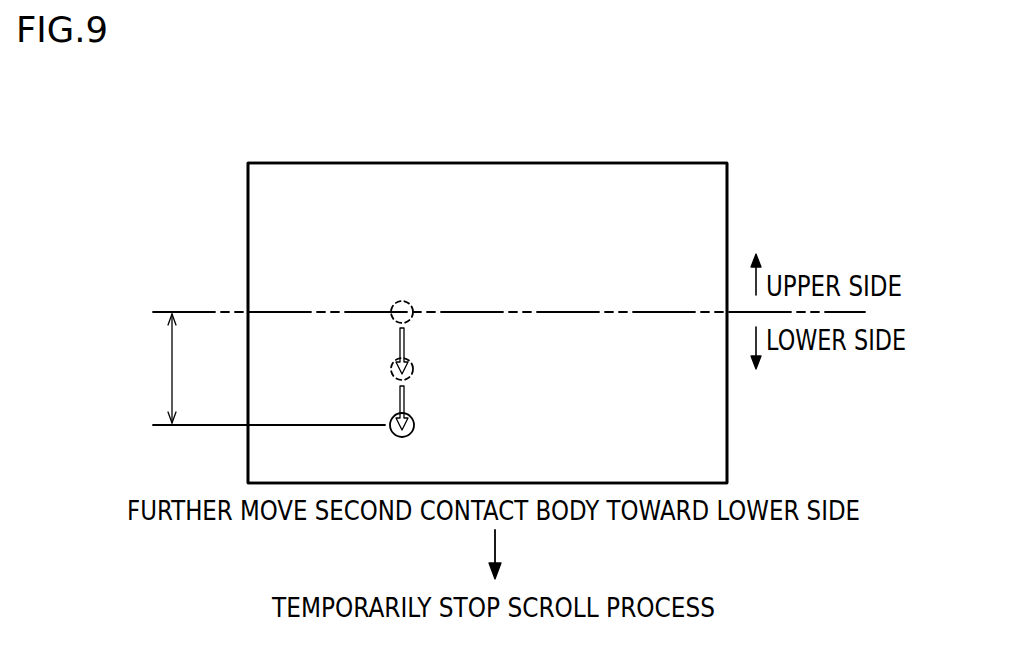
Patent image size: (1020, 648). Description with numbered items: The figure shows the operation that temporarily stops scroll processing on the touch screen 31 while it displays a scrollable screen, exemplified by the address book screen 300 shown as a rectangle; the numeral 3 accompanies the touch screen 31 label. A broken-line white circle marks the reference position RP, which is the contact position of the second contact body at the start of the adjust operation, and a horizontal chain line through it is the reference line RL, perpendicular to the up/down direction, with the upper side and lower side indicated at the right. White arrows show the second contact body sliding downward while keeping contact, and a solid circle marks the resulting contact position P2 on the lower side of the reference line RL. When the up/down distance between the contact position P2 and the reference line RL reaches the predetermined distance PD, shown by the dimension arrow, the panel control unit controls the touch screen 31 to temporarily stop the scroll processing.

The touch screen 31 is at (458, 301).
The display unit 3 is at (310, 163).
The address book screen 300 is at (656, 178).
The reference line RL is at (575, 309).
The reference position RP is at (397, 304).
The contact position P2 is at (397, 414).
The predetermined distance PD is at (256, 369).